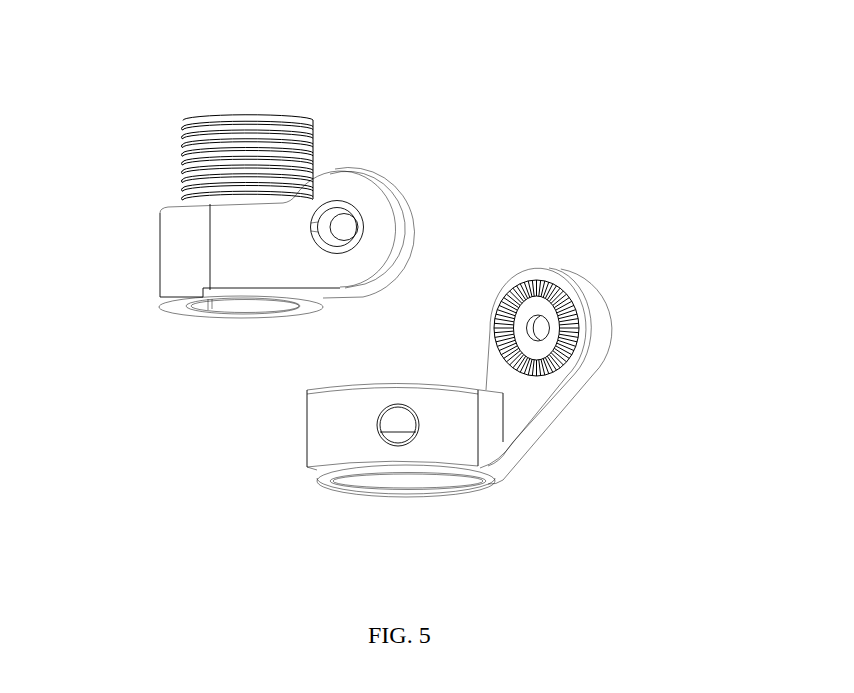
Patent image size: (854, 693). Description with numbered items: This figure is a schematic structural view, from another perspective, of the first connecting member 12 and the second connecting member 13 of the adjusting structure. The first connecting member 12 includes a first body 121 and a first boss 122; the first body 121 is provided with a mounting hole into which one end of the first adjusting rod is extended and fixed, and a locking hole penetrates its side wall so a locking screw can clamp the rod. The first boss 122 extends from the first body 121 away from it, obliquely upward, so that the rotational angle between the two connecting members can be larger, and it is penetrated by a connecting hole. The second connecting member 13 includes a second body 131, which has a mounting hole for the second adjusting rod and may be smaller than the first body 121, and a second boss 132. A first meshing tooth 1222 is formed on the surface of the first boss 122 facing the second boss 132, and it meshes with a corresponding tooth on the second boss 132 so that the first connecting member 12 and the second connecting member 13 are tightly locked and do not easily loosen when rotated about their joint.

The first connecting member 12 is at (588, 457).
The first body 121 is at (433, 450).
The first boss 122 is at (593, 295).
The first meshing tooth 1222 is at (552, 285).
The second connecting member 13 is at (188, 92).
The second body 131 is at (242, 262).
The second boss 132 is at (377, 177).